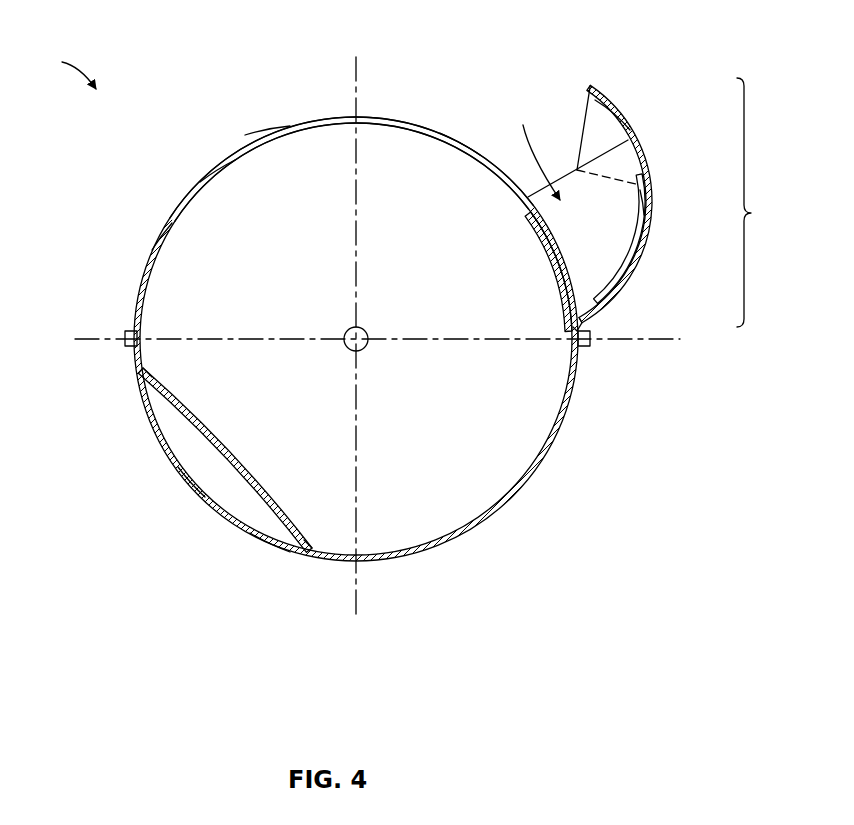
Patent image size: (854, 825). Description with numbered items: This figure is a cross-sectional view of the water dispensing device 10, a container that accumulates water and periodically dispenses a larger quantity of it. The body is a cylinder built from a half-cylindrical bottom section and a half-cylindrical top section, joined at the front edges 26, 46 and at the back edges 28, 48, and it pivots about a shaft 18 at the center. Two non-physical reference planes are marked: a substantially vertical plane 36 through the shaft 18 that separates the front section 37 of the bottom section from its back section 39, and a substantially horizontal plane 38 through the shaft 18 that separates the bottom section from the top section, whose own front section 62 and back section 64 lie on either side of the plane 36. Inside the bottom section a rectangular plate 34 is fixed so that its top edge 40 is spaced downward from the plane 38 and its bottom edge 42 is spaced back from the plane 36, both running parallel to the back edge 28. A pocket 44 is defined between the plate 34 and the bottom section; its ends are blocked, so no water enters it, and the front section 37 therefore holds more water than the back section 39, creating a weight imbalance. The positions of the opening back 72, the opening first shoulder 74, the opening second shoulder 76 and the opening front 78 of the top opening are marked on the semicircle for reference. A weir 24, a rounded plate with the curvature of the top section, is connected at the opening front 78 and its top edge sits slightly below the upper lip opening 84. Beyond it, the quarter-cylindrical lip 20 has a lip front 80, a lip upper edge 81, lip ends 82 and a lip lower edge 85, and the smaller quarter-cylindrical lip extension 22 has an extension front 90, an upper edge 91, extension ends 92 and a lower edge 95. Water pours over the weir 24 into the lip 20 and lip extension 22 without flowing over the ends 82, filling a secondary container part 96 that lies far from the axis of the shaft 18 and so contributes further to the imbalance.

The water dispensing device 10 is at (69, 59).
The shaft 18 is at (367, 350).
The lip 20 is at (643, 228).
The lip extension 22 is at (625, 115).
The weir 24 is at (537, 242).
The front edge 26 is at (631, 358).
The front edge 46 is at (590, 348).
The back edge 28 is at (98, 312).
The back edge 48 is at (132, 333).
The plate 34 is at (235, 465).
The plane 36 is at (358, 607).
The front section 37 is at (525, 432).
The plane 38 is at (92, 345).
The back section 39 is at (293, 473).
The top edge 40 is at (145, 365).
The bottom edge 42 is at (317, 545).
The pocket 44 is at (210, 472).
The front section 62 is at (395, 145).
The back section 64 is at (248, 227).
The opening back 72 is at (178, 215).
The opening first shoulder 74 is at (255, 143).
The opening second shoulder 76 is at (452, 140).
The opening front 78 is at (637, 315).
The lip lower edge 85 is at (583, 322).
The lip front 80 is at (638, 253).
The lip upper edge 81 is at (627, 130).
The lip ends 82 is at (622, 203).
The upper lip opening 84 is at (532, 150).
The extension front 90 is at (592, 82).
The upper edge 91 is at (580, 137).
The extension ends 92 is at (593, 118).
The lower edge 95 is at (640, 183).
The secondary container part 96 is at (762, 202).